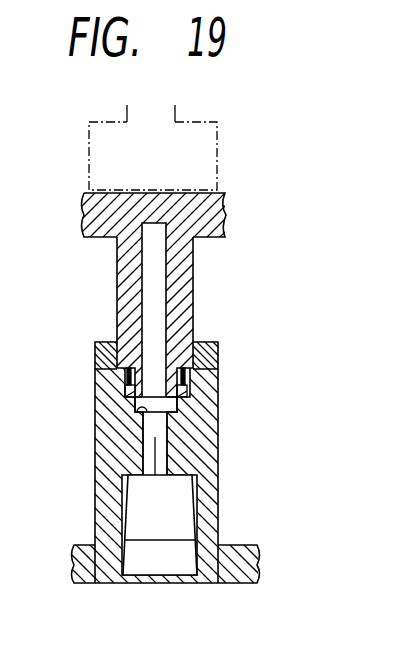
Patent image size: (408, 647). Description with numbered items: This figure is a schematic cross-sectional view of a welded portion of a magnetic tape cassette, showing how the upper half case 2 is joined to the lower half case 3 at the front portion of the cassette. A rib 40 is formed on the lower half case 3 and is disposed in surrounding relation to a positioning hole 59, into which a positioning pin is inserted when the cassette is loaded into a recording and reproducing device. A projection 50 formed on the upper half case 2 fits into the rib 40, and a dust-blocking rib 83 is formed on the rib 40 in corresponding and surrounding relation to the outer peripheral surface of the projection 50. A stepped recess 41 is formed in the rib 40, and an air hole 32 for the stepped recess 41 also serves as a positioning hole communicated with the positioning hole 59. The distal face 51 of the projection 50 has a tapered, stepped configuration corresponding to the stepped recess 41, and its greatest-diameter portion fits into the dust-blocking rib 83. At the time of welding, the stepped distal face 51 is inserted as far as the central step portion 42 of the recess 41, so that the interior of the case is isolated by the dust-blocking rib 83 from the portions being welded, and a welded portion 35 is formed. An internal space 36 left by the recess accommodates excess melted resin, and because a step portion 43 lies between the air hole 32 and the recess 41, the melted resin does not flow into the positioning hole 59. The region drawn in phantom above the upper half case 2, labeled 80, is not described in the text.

The upper half case 2 is at (82, 213).
The lower half case 3 is at (246, 566).
The air hole 32 is at (170, 460).
The welded portion 35 is at (180, 404).
The internal space 36 is at (190, 423).
The rib 40 is at (97, 453).
The stepped recess 41 is at (126, 381).
The central step portion 42 is at (126, 404).
The step portion 43 is at (126, 428).
The projection 50 is at (115, 273).
The distal face 51 is at (172, 364).
The positioning hole 59 is at (181, 580).
The actuator 80 is at (215, 149).
The dust-blocking rib 83 is at (100, 340).